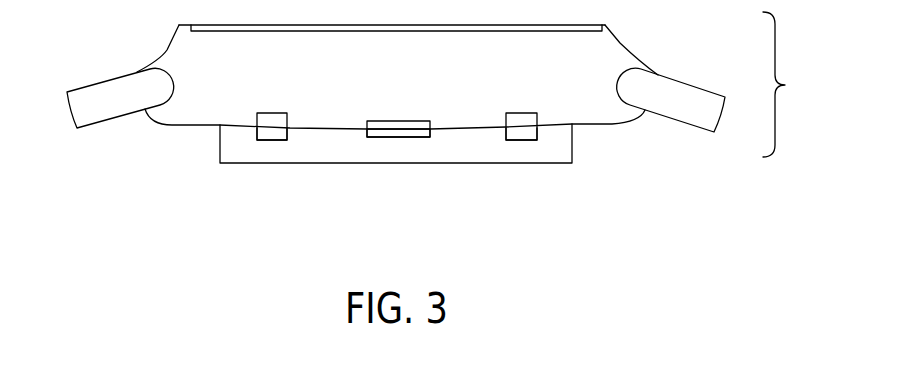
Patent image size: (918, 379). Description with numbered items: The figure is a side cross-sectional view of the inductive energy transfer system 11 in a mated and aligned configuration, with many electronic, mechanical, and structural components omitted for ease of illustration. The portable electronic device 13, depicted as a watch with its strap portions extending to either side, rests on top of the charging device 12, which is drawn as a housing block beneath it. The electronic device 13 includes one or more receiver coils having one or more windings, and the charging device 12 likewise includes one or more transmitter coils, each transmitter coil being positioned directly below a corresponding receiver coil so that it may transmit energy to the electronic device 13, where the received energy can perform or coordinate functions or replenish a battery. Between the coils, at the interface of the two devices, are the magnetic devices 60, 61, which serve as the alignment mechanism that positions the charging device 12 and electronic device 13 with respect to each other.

The inductive energy transfer system 11 is at (787, 84).
The charging device 12 is at (573, 163).
The portable electronic device 13 is at (142, 47).
The magnetic device 60 is at (410, 120).
The magnetic device 61 is at (400, 137).